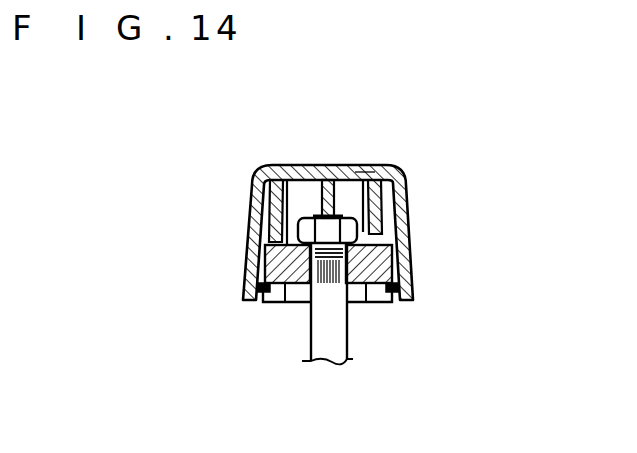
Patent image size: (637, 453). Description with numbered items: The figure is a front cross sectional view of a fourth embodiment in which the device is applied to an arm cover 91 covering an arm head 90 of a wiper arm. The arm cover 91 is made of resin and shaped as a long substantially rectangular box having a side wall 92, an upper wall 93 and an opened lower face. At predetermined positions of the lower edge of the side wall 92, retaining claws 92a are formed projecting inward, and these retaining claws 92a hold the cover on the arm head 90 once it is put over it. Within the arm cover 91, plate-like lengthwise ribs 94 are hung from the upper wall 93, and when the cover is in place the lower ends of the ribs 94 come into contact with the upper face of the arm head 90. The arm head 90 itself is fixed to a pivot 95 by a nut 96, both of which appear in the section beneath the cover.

The arm head 90 is at (357, 303).
The arm cover 91 is at (261, 166).
The side wall 92 is at (250, 234).
The retaining claw 92a is at (270, 305).
The upper wall 93 is at (328, 168).
The lengthwise rib 94 is at (250, 196).
The pivot 95 is at (310, 340).
The nut 96 is at (366, 168).